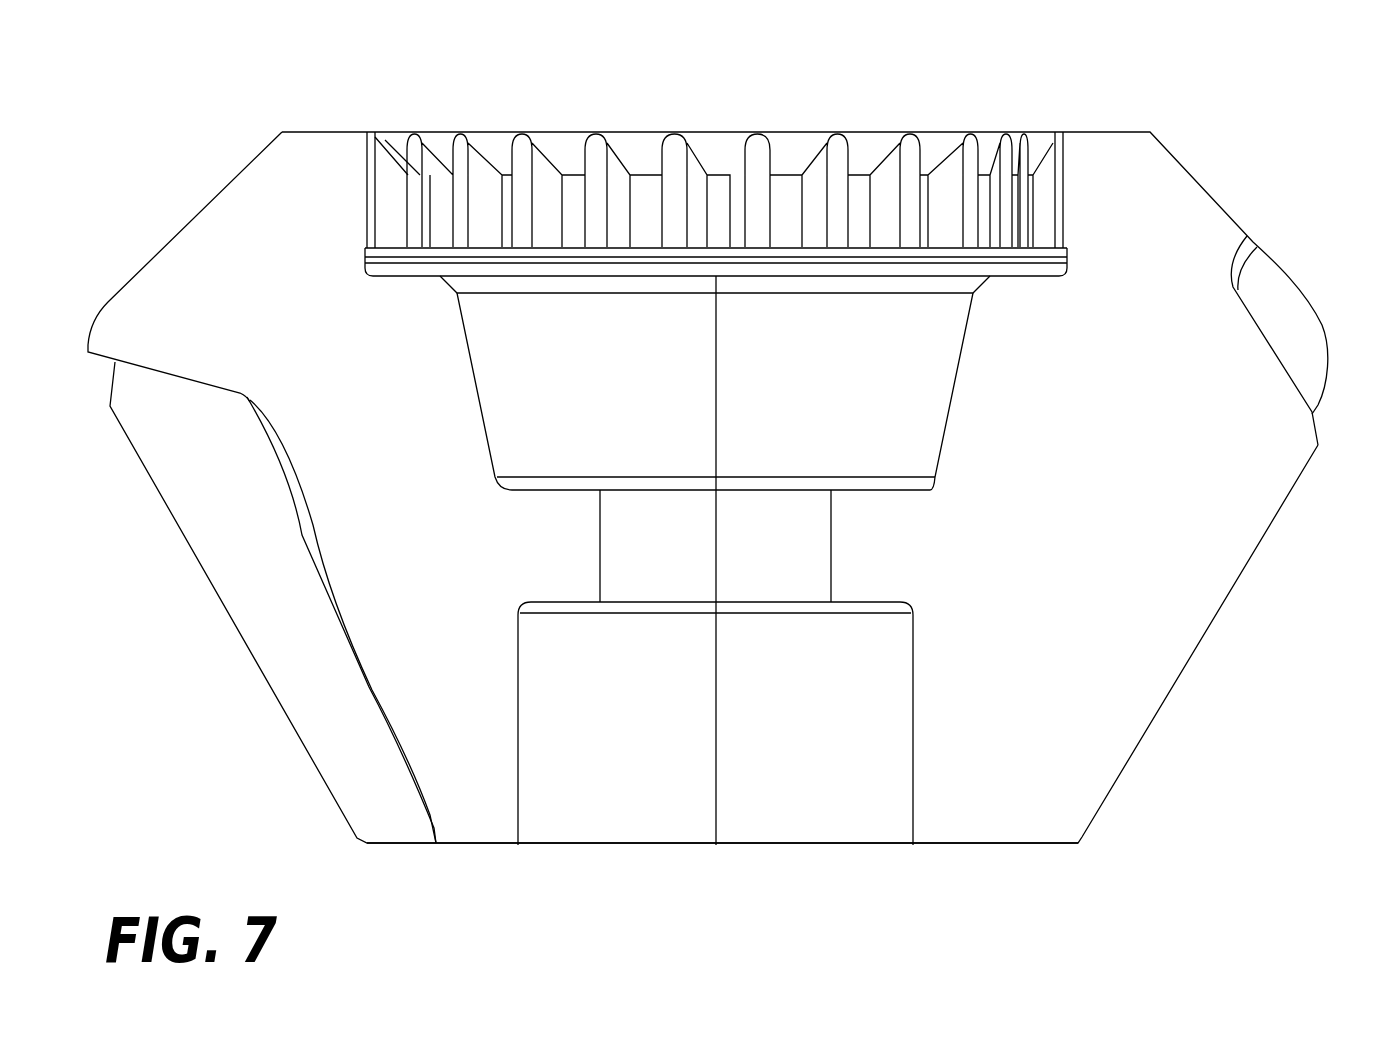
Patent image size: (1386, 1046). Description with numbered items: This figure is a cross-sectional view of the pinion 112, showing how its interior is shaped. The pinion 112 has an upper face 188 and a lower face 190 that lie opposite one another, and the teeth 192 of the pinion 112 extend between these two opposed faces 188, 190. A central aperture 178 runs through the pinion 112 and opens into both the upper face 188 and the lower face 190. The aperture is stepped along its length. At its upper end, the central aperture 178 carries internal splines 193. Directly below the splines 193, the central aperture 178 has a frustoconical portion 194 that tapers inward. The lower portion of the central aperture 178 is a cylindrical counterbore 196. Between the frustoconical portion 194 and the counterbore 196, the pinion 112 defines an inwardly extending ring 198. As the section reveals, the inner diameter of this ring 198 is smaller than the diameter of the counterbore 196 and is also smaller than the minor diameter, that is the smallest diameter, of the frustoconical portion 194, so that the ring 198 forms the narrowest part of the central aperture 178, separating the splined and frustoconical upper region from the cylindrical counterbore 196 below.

The pinion 112 is at (1242, 105).
The central aperture 178 is at (661, 830).
The upper face 188 is at (332, 132).
The lower face 190 is at (477, 847).
The teeth 192 is at (280, 654).
The internal splines 193 is at (888, 177).
The frustoconical portion 194 is at (923, 398).
The counterbore 196 is at (885, 748).
The inwardly extending ring 198 is at (875, 547).